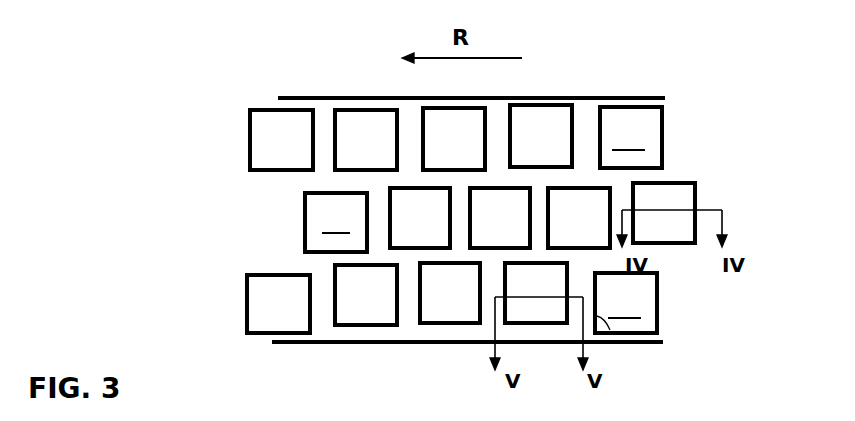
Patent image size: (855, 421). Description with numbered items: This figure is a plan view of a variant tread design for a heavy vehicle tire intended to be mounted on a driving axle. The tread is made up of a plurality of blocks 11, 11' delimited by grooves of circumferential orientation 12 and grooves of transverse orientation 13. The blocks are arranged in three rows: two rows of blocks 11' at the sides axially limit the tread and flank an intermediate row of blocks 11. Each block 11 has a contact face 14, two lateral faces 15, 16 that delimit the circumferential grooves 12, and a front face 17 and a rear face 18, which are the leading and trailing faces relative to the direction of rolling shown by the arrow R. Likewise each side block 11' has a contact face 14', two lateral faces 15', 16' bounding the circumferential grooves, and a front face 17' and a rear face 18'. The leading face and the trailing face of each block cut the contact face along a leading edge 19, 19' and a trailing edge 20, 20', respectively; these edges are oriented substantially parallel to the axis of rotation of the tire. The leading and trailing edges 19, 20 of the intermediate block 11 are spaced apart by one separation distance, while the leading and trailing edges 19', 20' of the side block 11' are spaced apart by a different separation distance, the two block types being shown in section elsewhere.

The block 11 is at (336, 222).
The block 11' is at (628, 220).
The groove of circumferential orientation 12 is at (318, 181).
The groove of transverse orientation 13 is at (458, 197).
The contact face 14 is at (235, 235).
The lateral face 15 is at (365, 165).
The lateral face 16 is at (277, 266).
The front face 17 is at (263, 219).
The rear face 18 is at (342, 307).
The contact face 14' is at (695, 72).
The lateral face 15' is at (631, 64).
The lateral face 16' is at (704, 168).
The front face 17' is at (575, 103).
The rear face 18' is at (732, 124).
The leading edge 19 is at (720, 213).
The trailing edge 20 is at (735, 221).
The leading edge 19' is at (648, 365).
The trailing edge 20' is at (708, 303).